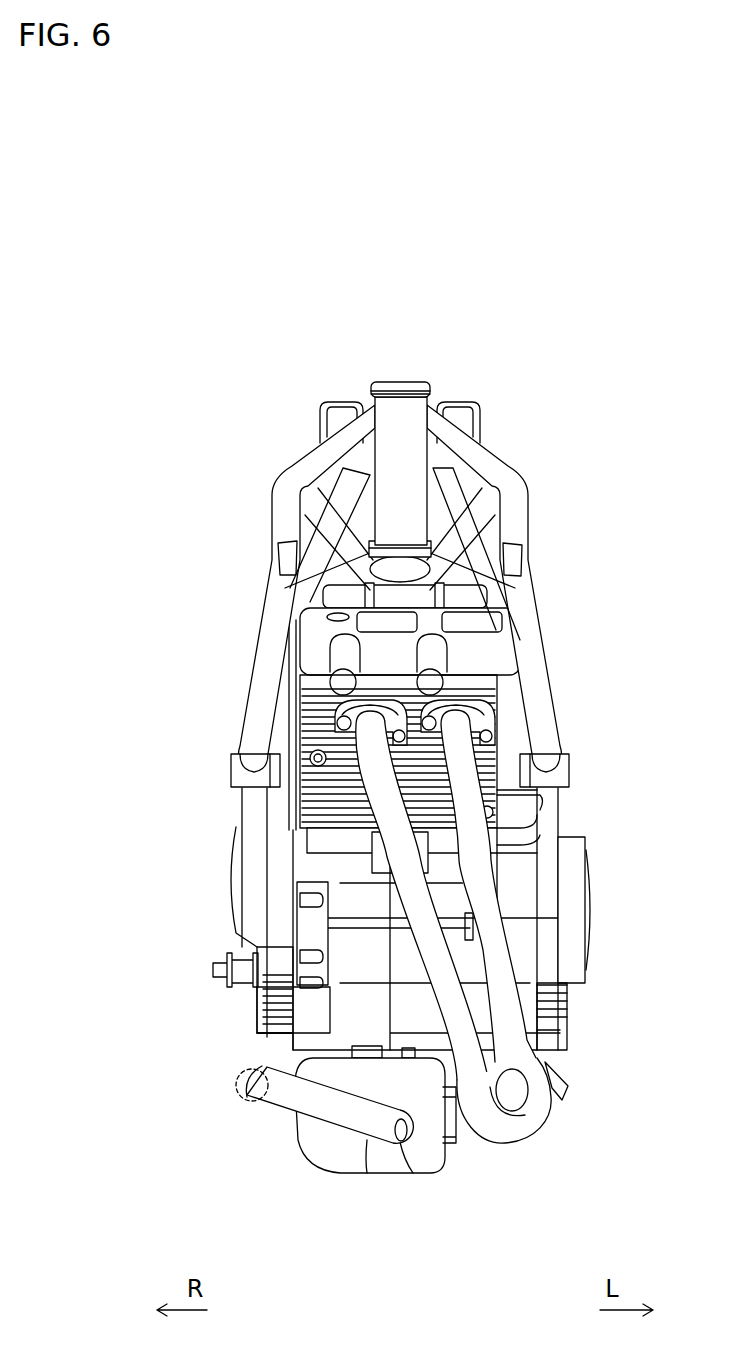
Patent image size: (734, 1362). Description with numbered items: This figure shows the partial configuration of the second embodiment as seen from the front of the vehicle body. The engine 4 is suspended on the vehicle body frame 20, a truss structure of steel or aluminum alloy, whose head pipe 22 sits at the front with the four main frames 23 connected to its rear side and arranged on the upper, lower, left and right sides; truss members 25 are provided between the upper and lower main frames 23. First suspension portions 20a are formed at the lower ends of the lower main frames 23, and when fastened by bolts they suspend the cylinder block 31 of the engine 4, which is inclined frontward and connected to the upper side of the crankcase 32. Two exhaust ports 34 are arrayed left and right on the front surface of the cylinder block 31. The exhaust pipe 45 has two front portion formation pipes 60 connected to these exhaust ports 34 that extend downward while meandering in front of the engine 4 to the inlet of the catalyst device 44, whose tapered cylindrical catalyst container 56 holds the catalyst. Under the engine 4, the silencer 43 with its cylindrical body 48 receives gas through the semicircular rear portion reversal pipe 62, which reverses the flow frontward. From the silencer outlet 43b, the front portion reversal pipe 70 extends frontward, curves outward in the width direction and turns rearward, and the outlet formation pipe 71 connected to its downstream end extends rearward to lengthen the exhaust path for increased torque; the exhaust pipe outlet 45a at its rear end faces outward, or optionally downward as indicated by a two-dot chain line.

The engine 4 is at (600, 947).
The vehicle body frame 20 is at (384, 368).
The first suspension portions 20a is at (228, 772).
The head pipe 22 is at (423, 383).
The main frames 23 is at (281, 482).
The truss members 25 is at (331, 526).
The cylinder block 31 is at (503, 792).
The crankcase 32 is at (307, 930).
The exhaust ports 34 is at (347, 740).
The silencer 43 is at (361, 1157).
The silencer outlet 43b is at (395, 1140).
The catalyst device 44 is at (483, 999).
The exhaust pipe 45 is at (507, 909).
The exhaust pipe outlet 45a is at (267, 1067).
The cylindrical body 48 is at (333, 1173).
The catalyst container 56 is at (494, 1153).
The front portion formation pipes 60 is at (540, 1005).
The rear portion reversal pipe 62 is at (458, 1127).
The front portion reversal pipe 70 is at (383, 1127).
The outlet formation pipe 71 is at (243, 1098).